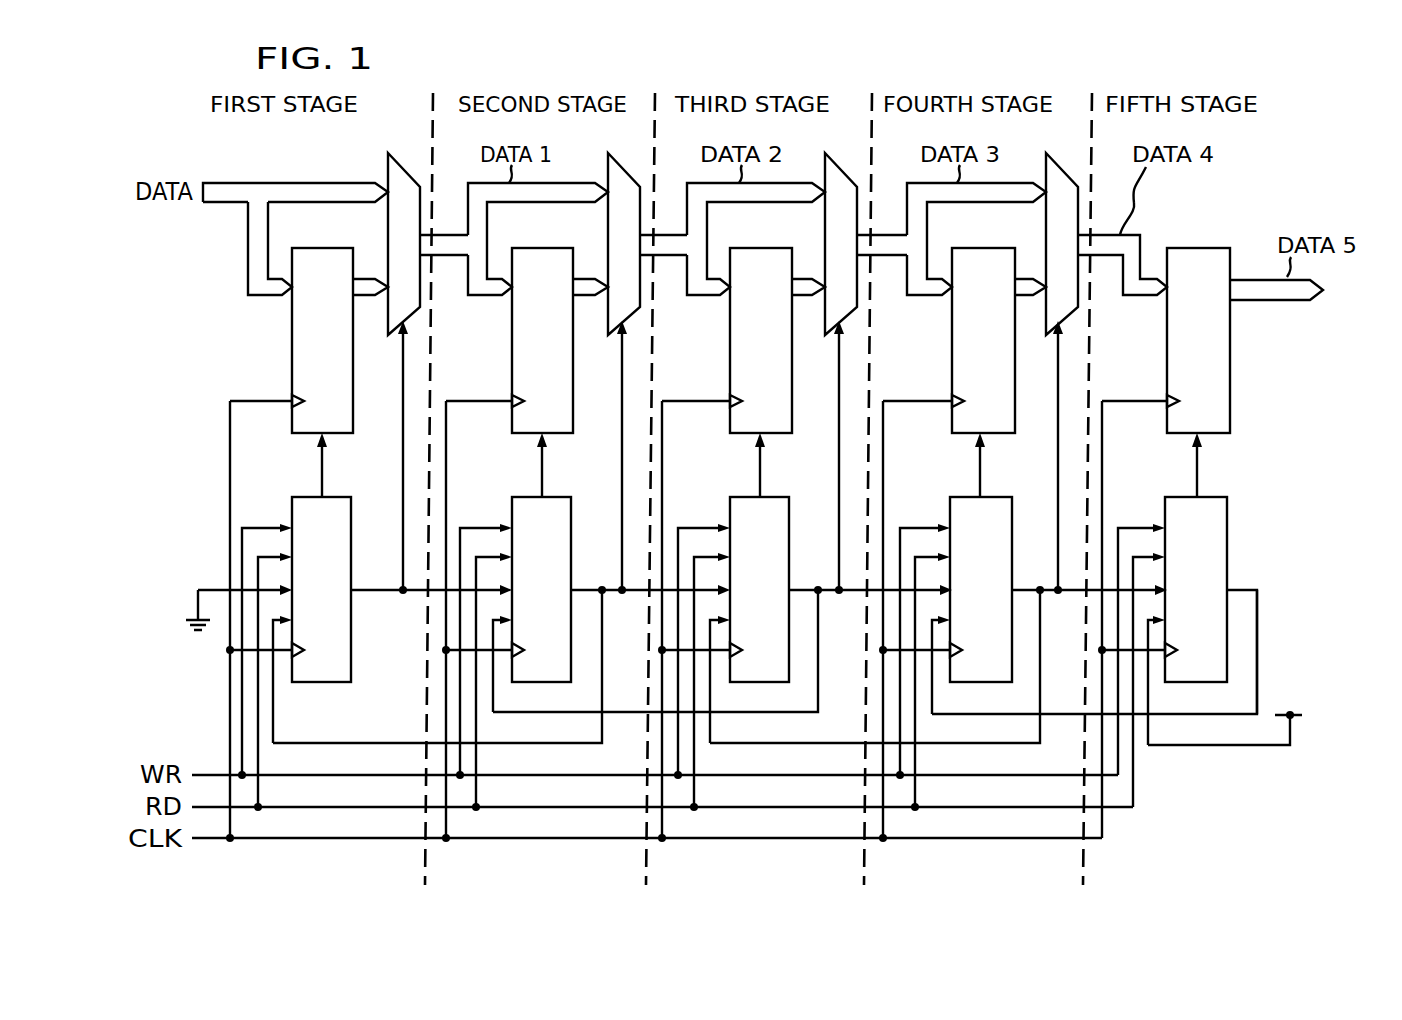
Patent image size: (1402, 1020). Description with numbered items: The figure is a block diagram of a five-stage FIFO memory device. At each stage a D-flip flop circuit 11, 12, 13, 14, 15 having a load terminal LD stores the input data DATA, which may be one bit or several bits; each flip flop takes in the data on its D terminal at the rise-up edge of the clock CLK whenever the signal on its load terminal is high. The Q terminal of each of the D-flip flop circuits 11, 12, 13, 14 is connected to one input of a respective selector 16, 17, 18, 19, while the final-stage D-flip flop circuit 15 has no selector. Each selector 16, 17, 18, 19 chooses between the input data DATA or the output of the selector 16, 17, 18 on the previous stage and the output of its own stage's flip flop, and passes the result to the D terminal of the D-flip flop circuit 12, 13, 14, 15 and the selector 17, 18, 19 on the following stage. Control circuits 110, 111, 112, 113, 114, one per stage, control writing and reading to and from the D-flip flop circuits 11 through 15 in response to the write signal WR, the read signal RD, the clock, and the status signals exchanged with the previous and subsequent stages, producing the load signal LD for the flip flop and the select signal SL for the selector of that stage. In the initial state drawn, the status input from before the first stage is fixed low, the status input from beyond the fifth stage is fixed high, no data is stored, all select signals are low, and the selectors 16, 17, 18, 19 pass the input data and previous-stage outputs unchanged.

The D-flip flop circuit 11 is at (322, 248).
The D-flip flop circuit 12 is at (538, 248).
The D-flip flop circuit 13 is at (755, 248).
The D-flip flop circuit 14 is at (978, 248).
The D-flip flop circuit 15 is at (1198, 248).
The selector 16 is at (400, 161).
The selector 17 is at (633, 161).
The selector 18 is at (850, 161).
The selector 19 is at (1070, 161).
The control circuit 110 is at (338, 495).
The control circuit 111 is at (558, 495).
The control circuit 112 is at (775, 495).
The control circuit 113 is at (995, 495).
The control circuit 114 is at (1217, 495).